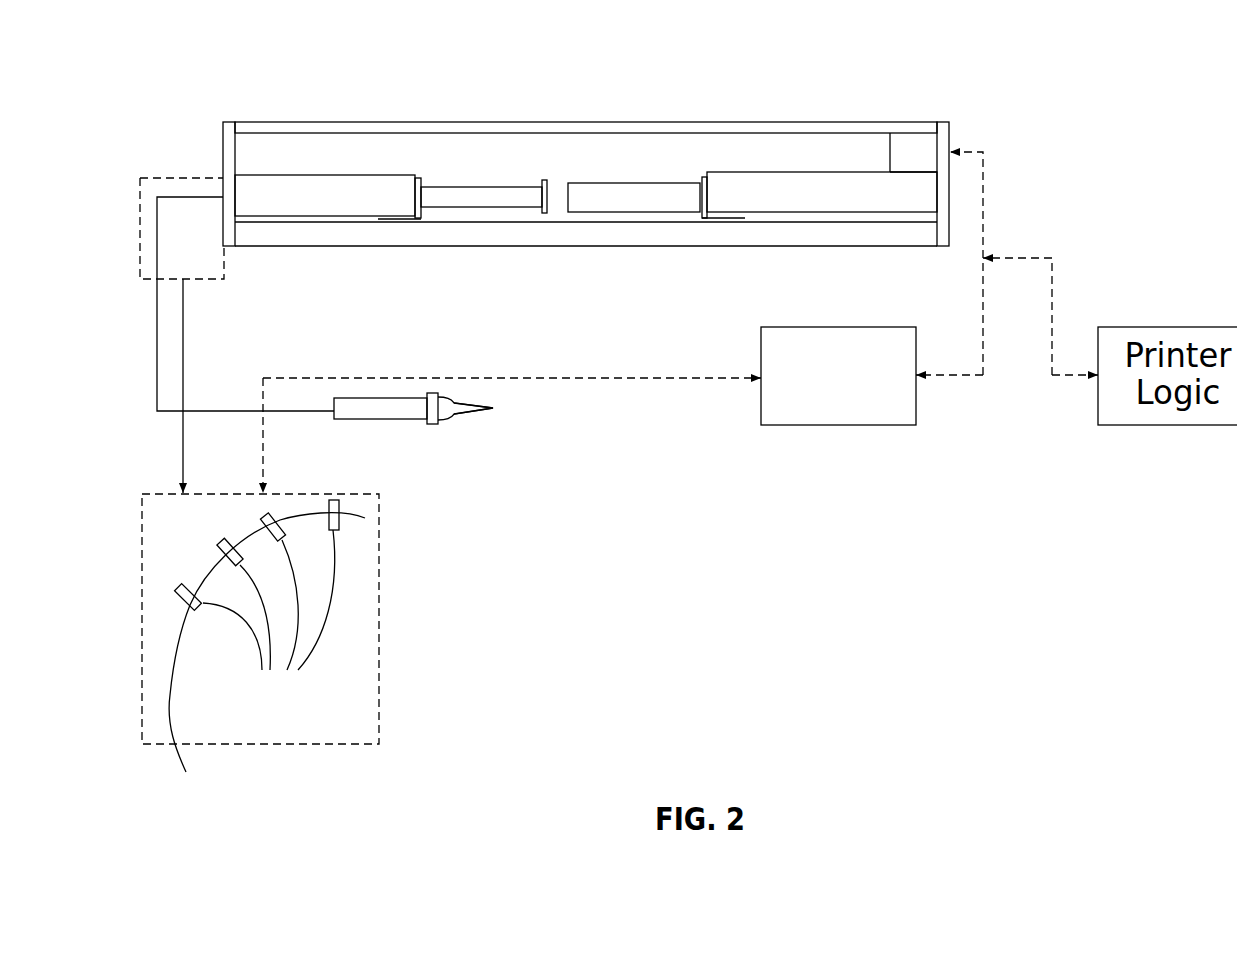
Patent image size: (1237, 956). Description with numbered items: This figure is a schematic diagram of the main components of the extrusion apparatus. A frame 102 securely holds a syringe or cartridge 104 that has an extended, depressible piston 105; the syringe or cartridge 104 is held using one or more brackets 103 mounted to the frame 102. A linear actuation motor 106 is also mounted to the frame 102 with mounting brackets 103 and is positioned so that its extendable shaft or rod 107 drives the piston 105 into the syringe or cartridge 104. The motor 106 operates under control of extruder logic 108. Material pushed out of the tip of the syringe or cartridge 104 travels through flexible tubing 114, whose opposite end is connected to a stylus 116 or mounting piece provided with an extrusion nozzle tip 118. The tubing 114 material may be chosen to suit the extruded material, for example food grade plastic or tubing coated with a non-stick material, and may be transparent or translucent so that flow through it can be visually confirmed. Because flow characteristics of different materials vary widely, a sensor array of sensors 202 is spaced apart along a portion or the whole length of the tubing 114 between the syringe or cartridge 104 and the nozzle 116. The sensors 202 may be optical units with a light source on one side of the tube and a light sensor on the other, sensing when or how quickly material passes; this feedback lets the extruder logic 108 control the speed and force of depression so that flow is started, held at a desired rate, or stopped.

The frame 102 is at (222, 162).
The brackets 103 is at (419, 174).
The syringe or cartridge 104 is at (340, 200).
The depressible piston 105 is at (497, 187).
The linear actuation motor 106 is at (843, 195).
The extendable shaft or rod 107 is at (652, 200).
The extruder logic 108 is at (903, 403).
The flexible tubing 114 is at (157, 355).
The stylus 116 is at (385, 412).
The extrusion nozzle tip 118 is at (493, 410).
The sensors 202 is at (257, 602).